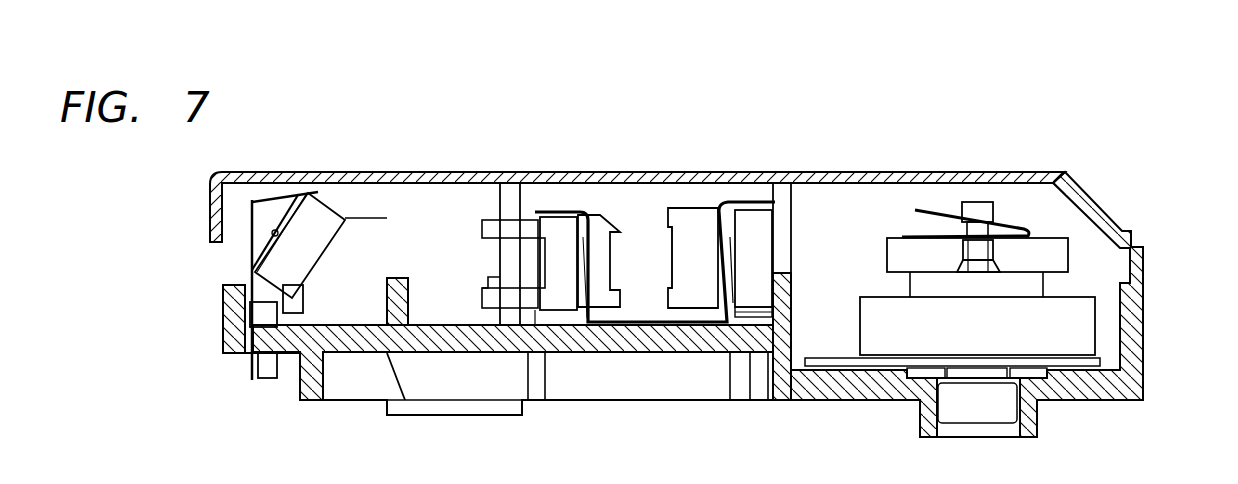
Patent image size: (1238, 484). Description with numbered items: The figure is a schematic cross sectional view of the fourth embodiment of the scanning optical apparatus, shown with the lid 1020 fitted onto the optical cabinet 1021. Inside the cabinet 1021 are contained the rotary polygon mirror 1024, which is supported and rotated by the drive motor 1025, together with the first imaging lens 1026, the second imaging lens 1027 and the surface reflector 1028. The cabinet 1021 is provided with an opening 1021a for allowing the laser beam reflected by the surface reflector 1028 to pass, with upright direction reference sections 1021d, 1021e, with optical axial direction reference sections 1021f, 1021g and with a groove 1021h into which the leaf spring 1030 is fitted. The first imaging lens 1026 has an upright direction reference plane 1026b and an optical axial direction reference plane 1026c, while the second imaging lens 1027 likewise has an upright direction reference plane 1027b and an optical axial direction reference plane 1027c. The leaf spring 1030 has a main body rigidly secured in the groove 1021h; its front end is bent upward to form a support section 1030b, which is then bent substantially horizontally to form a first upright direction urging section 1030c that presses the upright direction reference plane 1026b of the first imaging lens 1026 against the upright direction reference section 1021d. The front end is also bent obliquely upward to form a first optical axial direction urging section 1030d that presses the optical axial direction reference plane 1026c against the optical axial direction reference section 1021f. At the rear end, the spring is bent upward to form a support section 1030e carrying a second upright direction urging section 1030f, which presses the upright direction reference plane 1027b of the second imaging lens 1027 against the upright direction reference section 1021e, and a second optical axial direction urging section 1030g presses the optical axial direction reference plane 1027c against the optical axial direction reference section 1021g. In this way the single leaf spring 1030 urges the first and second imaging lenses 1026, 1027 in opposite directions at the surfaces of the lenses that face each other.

The lid 1020 is at (972, 172).
The optical cabinet 1021 is at (1090, 387).
The opening 1021a is at (353, 382).
The upright direction reference section 1021d is at (733, 303).
The upright direction reference section 1021e is at (553, 305).
The optical axial direction reference section 1021f is at (784, 200).
The optical axial direction reference section 1021g is at (547, 262).
The groove 1021h is at (632, 325).
The rotary polygon mirror 1024 is at (1048, 243).
The drive motor 1025 is at (1080, 330).
The first imaging lens 1026 is at (680, 213).
The upright direction reference plane 1026b is at (767, 352).
The optical axial direction reference plane 1026c is at (791, 257).
The second imaging lens 1027 is at (503, 183).
The upright direction reference plane 1027b is at (547, 313).
The optical axial direction reference plane 1027c is at (537, 295).
The surface reflector 1028 is at (293, 227).
The leaf spring 1030 is at (538, 204).
The support section 1030b is at (718, 215).
The first upright direction urging section 1030c is at (752, 210).
The first optical axial direction urging section 1030d is at (726, 206).
The support section 1030e is at (668, 213).
The second upright direction urging section 1030f is at (563, 212).
The second optical axial direction urging section 1030g is at (585, 215).